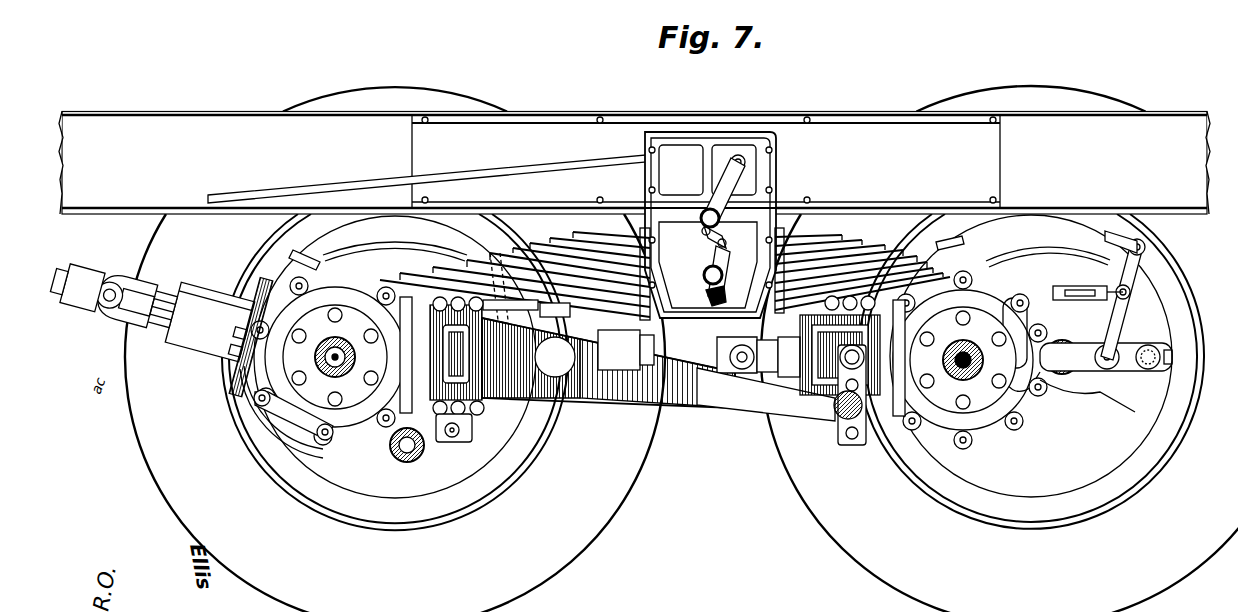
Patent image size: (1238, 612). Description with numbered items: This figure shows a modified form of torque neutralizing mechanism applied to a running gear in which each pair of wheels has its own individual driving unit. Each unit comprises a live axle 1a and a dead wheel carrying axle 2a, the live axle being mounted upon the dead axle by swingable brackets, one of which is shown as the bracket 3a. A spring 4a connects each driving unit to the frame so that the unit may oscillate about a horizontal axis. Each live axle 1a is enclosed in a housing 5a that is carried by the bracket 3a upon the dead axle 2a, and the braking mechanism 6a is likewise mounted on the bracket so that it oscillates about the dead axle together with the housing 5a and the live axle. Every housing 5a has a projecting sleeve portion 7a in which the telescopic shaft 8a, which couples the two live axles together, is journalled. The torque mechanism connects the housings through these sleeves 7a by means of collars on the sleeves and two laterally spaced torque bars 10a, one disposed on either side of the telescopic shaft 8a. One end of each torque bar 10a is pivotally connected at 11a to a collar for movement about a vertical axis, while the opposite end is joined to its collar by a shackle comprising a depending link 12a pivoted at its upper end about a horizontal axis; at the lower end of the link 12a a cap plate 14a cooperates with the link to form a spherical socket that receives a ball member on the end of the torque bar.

The live axle 1a is at (283, 413).
The dead wheel carrying axle 2a is at (407, 455).
The swingable bracket 3a is at (1092, 396).
The spring 4a is at (832, 238).
The housing 5a is at (243, 376).
The braking mechanism 6a is at (1140, 260).
The projecting sleeve portion 7a is at (800, 373).
The telescopic shaft 8a is at (710, 227).
The torque bar 10a is at (590, 400).
The pivotal connection 11a is at (475, 418).
The depending link 12a is at (450, 445).
The cap plate 14a is at (840, 410).